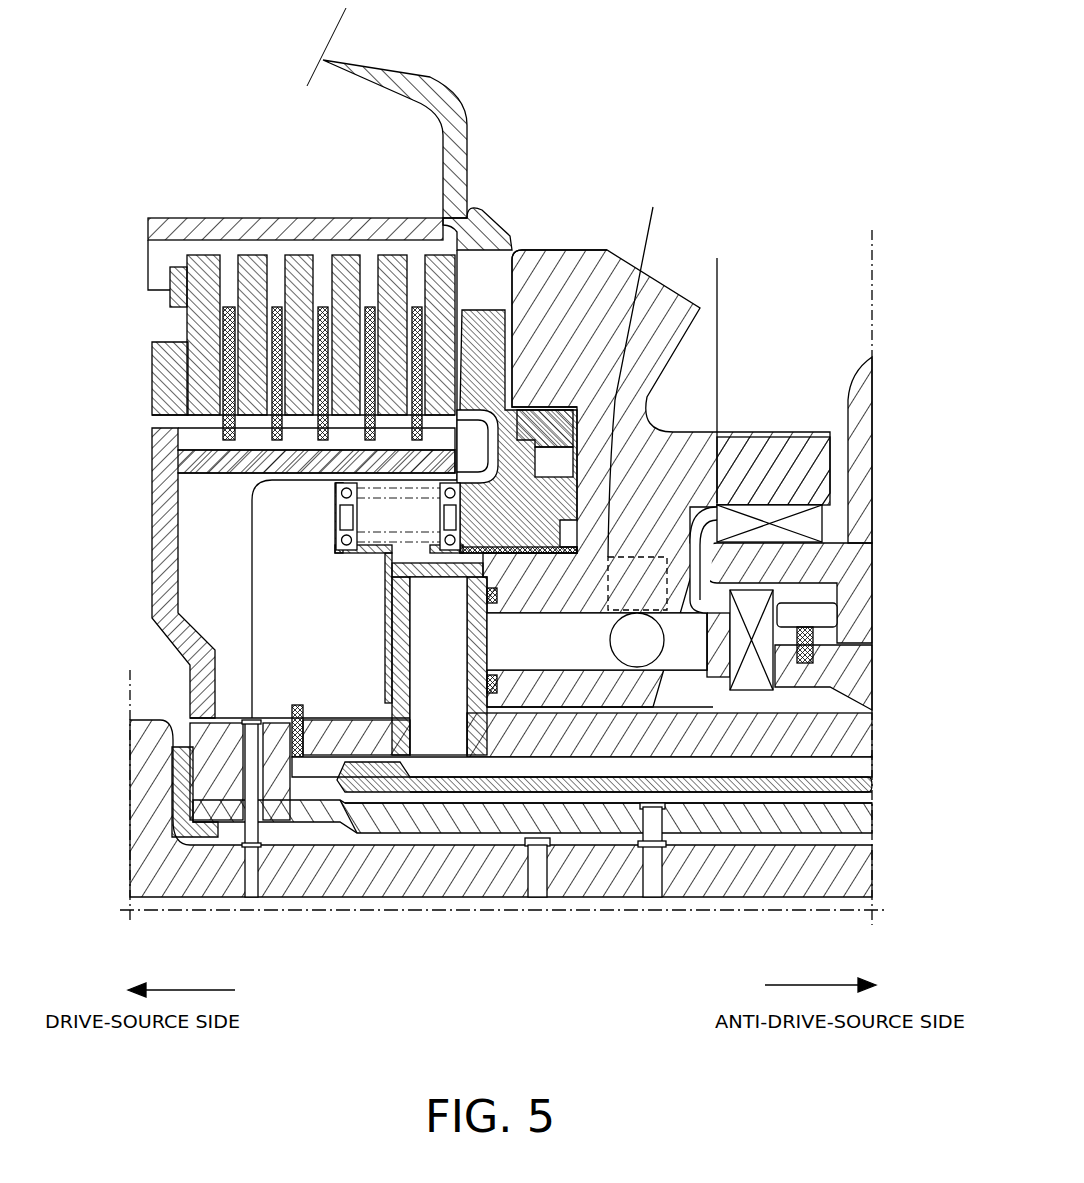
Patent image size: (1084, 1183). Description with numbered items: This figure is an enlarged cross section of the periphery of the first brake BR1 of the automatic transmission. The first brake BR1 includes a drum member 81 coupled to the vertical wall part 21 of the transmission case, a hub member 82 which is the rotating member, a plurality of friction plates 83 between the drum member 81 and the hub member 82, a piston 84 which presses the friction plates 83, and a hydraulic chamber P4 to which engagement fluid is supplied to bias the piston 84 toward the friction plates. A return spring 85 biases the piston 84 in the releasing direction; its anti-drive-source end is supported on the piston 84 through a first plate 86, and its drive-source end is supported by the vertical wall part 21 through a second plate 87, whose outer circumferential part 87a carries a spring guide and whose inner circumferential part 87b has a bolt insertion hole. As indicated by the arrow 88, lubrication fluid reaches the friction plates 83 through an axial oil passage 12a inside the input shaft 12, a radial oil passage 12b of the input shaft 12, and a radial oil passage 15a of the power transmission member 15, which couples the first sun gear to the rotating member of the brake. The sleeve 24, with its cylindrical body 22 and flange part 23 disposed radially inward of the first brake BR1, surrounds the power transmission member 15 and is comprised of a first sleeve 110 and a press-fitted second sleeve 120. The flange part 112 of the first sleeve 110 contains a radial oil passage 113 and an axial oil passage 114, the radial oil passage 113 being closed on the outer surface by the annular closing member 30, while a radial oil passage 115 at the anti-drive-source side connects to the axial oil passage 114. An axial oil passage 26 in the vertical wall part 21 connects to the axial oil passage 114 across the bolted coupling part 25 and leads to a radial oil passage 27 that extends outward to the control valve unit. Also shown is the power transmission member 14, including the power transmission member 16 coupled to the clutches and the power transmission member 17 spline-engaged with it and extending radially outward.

The drum member 81 is at (258, 218).
The hub member 82 is at (227, 475).
The friction plates 83 is at (462, 247).
The piston 84 is at (538, 250).
The return spring 85 is at (388, 506).
The first plate 86 is at (513, 395).
The second plate 87 is at (333, 550).
The outer circumferential part 87a is at (336, 508).
The inner circumferential part 87b is at (386, 632).
The arrow 88 is at (252, 590).
The first brake BR1 is at (148, 330).
The vertical wall part 21 is at (590, 250).
The axial oil passage 26 is at (746, 372).
The radial oil passage 27 is at (828, 367).
The power transmission member 17 is at (875, 398).
The power transmission member 14 is at (875, 626).
The power transmission member 16 is at (873, 661).
The closing member 30 is at (518, 431).
The hydraulic chamber P4 is at (578, 422).
The coupling part 25 is at (488, 647).
The flange part 23 is at (386, 662).
The flange part 112 is at (392, 588).
The radial oil passage 113 is at (393, 722).
The axial oil passage 114 is at (480, 697).
The first sleeve 110 is at (873, 731).
The radial oil passage 115 is at (873, 778).
The second sleeve 120 is at (873, 792).
The power transmission member 15 is at (873, 820).
The radial oil passage 15a is at (182, 772).
The input shaft 12 is at (130, 870).
The axial oil passage 12a is at (130, 912).
The radial oil passage 12b is at (238, 900).
The sleeve 24 is at (415, 800).
The cylindrical body 22 is at (493, 797).